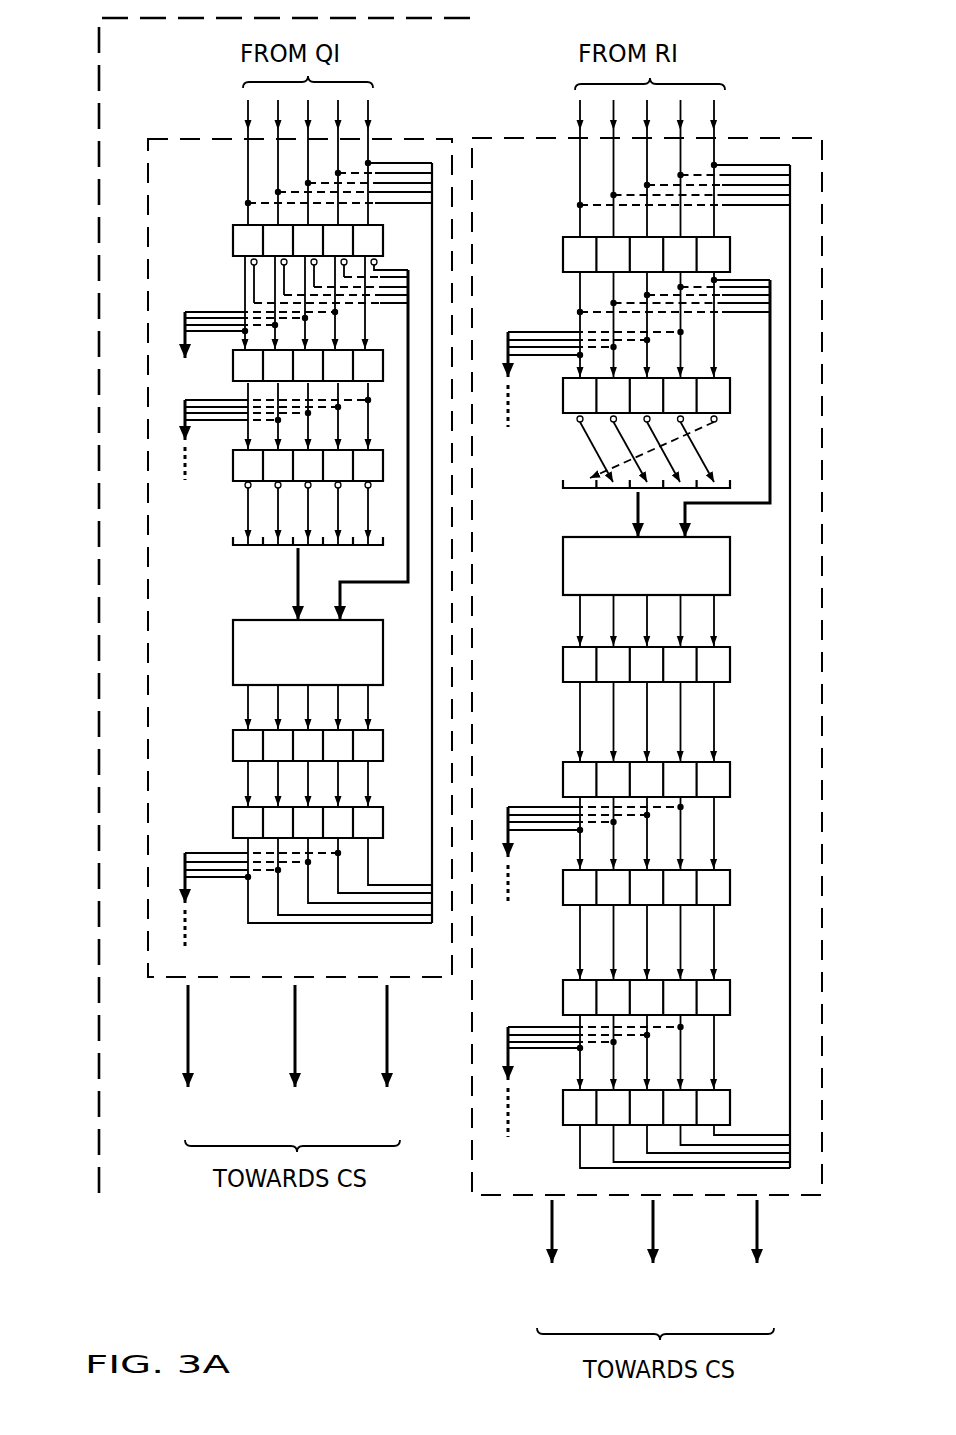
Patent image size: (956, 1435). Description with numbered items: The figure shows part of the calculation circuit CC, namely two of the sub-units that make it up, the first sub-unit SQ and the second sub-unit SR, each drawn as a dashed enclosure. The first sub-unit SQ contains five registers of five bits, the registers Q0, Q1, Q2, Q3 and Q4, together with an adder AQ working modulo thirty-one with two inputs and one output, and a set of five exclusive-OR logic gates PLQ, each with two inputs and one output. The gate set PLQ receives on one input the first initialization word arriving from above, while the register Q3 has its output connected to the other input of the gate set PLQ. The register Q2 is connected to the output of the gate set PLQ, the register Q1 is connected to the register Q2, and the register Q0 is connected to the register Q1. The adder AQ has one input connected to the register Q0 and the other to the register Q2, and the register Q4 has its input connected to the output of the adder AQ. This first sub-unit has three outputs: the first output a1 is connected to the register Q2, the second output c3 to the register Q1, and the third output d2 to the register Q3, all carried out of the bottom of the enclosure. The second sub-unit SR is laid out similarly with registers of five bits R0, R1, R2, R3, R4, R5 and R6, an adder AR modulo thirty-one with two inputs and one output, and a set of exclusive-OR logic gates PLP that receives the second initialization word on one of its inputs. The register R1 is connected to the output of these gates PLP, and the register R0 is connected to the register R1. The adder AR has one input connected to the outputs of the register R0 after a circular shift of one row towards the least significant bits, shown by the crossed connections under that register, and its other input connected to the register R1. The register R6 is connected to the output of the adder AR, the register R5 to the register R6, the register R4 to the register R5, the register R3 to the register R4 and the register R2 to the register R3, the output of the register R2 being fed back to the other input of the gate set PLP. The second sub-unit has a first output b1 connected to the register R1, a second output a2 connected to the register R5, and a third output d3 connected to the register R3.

The calculation circuit CC is at (100, 1165).
The first sub-unit SQ is at (147, 150).
The second sub-unit SR is at (821, 152).
The set of exclusive-OR logic gates PLQ is at (233, 157).
The P input bus lines PLP is at (566, 157).
The register Q2 is at (233, 242).
The register Q1 is at (233, 375).
The register Q0 is at (233, 470).
The adder modulo 31 AQ is at (233, 652).
The register Q4 is at (233, 745).
The register Q3 is at (233, 825).
The register R1 is at (563, 255).
The register R0 is at (563, 395).
The adder modulo 31 AR is at (563, 583).
The register R6 is at (730, 665).
The register R5 is at (730, 780).
The register R4 is at (730, 888).
The register R3 is at (730, 995).
The register R2 is at (730, 1105).
The first output a1 is at (183, 345).
The second output c3 is at (183, 440).
The third output d2 is at (183, 882).
The first output b1 is at (506, 366).
The second output a2 is at (504, 840).
The third output d3 is at (504, 1060).